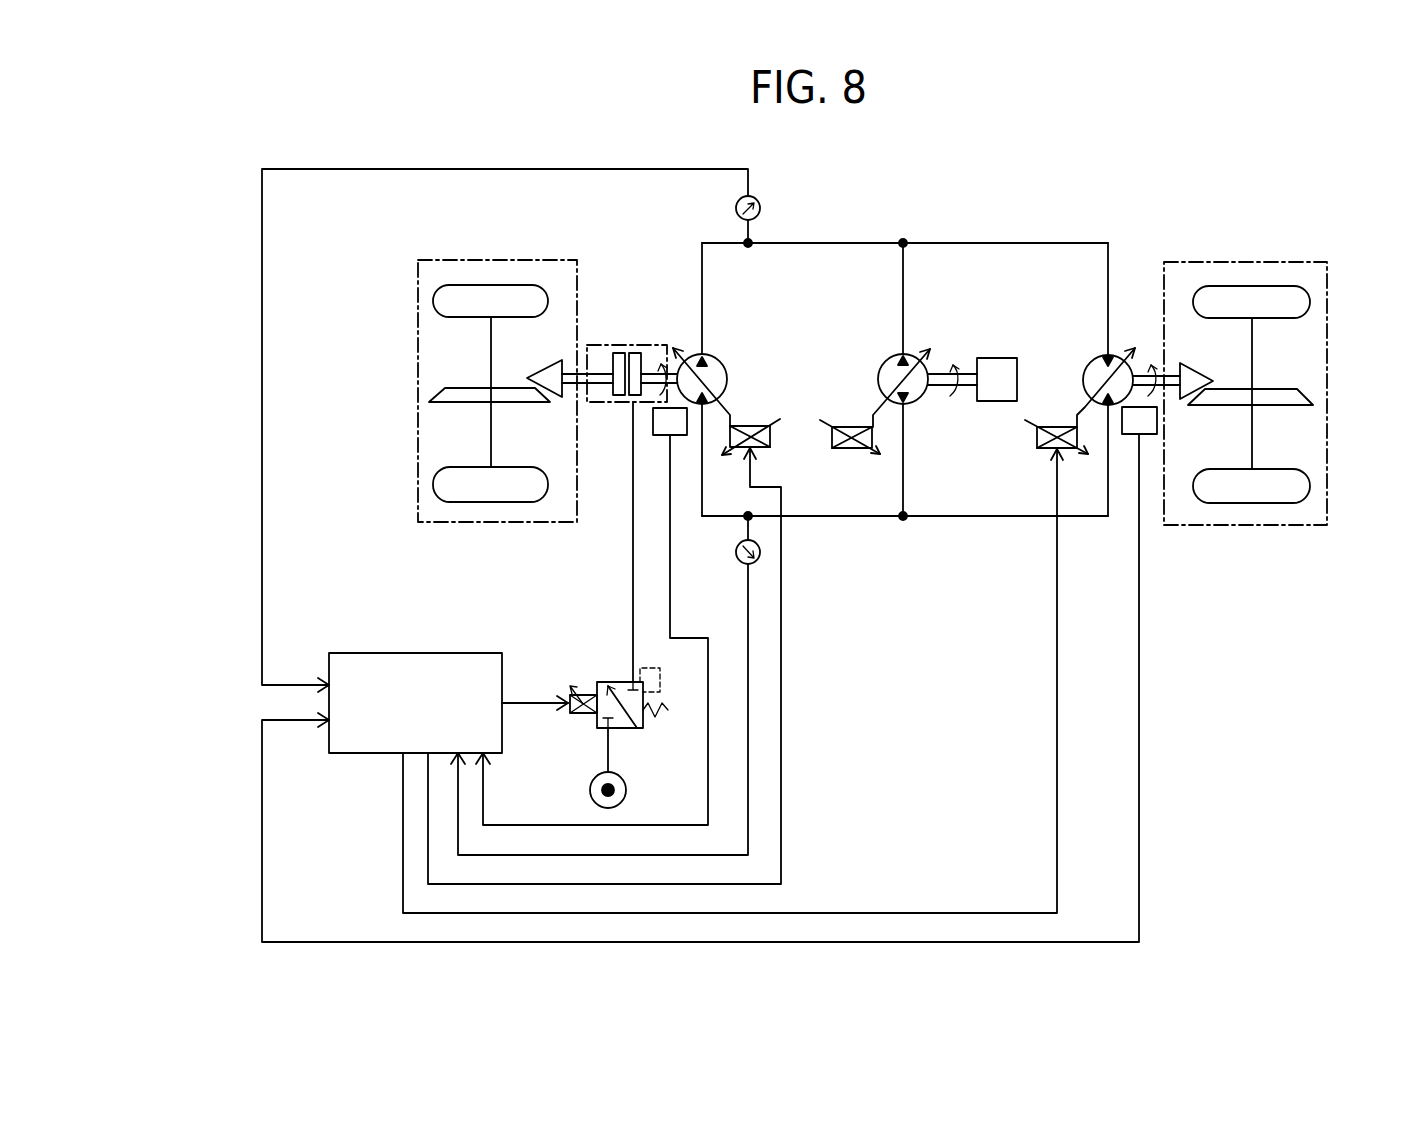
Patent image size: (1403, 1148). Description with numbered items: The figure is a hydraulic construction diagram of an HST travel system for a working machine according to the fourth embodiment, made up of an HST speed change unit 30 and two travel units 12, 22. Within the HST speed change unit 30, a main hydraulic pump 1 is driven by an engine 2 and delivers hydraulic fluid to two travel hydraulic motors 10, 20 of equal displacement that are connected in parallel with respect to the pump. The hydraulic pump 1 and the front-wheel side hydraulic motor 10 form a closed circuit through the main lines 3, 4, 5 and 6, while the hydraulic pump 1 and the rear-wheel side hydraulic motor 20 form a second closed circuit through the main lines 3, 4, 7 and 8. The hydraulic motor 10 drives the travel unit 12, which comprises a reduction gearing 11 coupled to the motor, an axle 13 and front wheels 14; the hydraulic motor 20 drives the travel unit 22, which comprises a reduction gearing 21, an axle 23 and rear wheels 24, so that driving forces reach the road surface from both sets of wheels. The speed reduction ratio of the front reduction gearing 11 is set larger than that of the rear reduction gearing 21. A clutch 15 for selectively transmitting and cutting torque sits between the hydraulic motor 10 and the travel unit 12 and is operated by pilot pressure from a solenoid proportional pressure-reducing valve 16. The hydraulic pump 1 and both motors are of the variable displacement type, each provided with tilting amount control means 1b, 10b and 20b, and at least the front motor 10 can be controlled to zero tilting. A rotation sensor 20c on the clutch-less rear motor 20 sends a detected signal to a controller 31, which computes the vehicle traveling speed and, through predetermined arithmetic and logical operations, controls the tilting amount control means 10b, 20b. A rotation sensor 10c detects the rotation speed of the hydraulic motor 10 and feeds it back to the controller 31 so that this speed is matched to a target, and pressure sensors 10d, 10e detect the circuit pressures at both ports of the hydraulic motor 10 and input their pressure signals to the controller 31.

The main hydraulic pump 1 is at (880, 364).
The tilting amount control means 1b is at (840, 449).
The engine 2 is at (997, 358).
The main line 3 is at (903, 287).
The main line 4 is at (903, 450).
The main line 5 is at (827, 244).
The main line 6 is at (803, 517).
The main line 7 is at (1055, 244).
The main line 8 is at (975, 517).
The hydraulic motor 10 is at (728, 362).
The tilting amount control means 10b is at (758, 426).
The rotation sensor 10c is at (686, 436).
The pressure sensor 10d is at (735, 208).
The pressure sensor 10e is at (740, 560).
The reduction gearing 11 is at (545, 366).
The travel unit 12 is at (540, 523).
The axle 13 is at (490, 355).
The front wheels 14 is at (473, 285).
The clutch 15 is at (605, 343).
The solenoid proportional pressure-reducing valve 16 is at (640, 729).
The hydraulic motor 20 is at (1086, 366).
The tilting amount control means 20b is at (1045, 449).
The rotation sensor 20c is at (1124, 435).
The reduction gearing 21 is at (1198, 366).
The travel unit 22 is at (1290, 526).
The axle 23 is at (1252, 355).
The rear wheels 24 is at (1234, 286).
The HST speed change unit 30 is at (950, 222).
The controller 31 is at (418, 653).